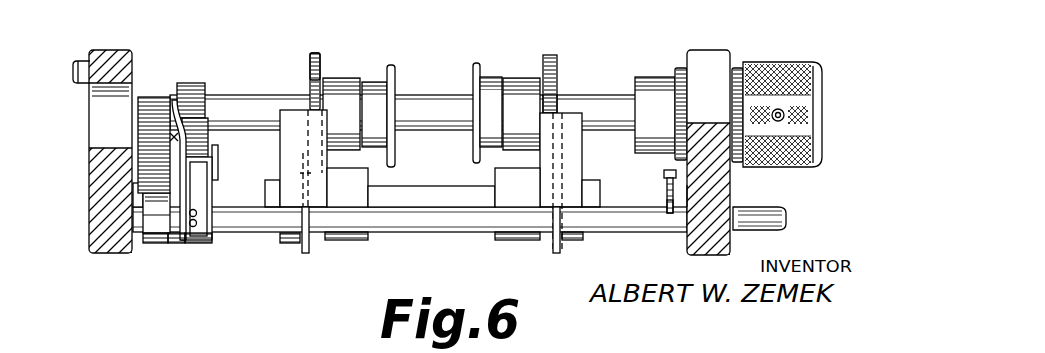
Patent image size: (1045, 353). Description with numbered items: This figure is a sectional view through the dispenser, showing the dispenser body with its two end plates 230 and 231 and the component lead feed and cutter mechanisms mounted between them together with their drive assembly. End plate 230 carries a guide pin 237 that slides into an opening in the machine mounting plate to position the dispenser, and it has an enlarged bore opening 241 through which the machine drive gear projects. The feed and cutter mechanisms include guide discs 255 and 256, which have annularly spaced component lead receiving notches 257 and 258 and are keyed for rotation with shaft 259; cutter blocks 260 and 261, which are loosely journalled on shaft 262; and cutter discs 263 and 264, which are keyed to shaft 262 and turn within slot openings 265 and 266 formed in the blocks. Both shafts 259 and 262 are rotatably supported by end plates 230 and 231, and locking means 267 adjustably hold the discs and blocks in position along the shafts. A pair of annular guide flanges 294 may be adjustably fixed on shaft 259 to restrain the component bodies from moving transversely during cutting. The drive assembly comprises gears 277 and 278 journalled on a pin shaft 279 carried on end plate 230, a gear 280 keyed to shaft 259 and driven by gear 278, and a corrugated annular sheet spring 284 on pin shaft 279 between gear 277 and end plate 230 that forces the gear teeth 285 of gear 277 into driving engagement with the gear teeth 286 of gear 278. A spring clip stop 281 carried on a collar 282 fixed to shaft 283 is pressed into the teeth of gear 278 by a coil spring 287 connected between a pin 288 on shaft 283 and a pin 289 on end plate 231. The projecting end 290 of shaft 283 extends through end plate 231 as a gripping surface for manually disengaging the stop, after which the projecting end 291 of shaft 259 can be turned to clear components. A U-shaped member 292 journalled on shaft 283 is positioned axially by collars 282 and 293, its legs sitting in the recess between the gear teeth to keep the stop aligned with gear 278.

The end plate 230 is at (100, 248).
The end plate 231 is at (722, 236).
The guide pin 237 is at (80, 56).
The enlarged bore opening 241 is at (102, 137).
The guide disc 255 is at (578, 35).
The guide disc 256 is at (315, 52).
The component lead receiving notch 257 is at (556, 108).
The component lead receiving notch 258 is at (311, 77).
The shaft 259 is at (428, 100).
The cutter block 260 is at (583, 127).
The cutter block 261 is at (283, 161).
The shaft 262 is at (478, 200).
The cutter disc 263 is at (556, 252).
The cutter disc 264 is at (360, 278).
The slot opening 265 is at (562, 190).
The slot opening 266 is at (292, 245).
The locking means 267 is at (345, 90).
The gear 277 is at (142, 158).
The gear 278 is at (206, 122).
The pin shaft 279 is at (219, 155).
The gear 280 is at (212, 64).
The spring clip stop 281 is at (202, 191).
The collar 282 is at (200, 248).
The shaft 283 is at (430, 228).
The corrugated annular sheet spring 284 is at (138, 175).
The gear teeth 285 is at (172, 137).
The gear teeth 286 is at (172, 100).
The coil spring 287 is at (686, 194).
The pin 288 is at (670, 213).
The pin 289 is at (665, 173).
The projecting end of shaft 290 is at (780, 218).
The projecting end of shaft 291 is at (813, 51).
The U-shaped member 292 is at (176, 246).
The collar 293 is at (158, 244).
The annular guide flange 294 is at (449, 173).